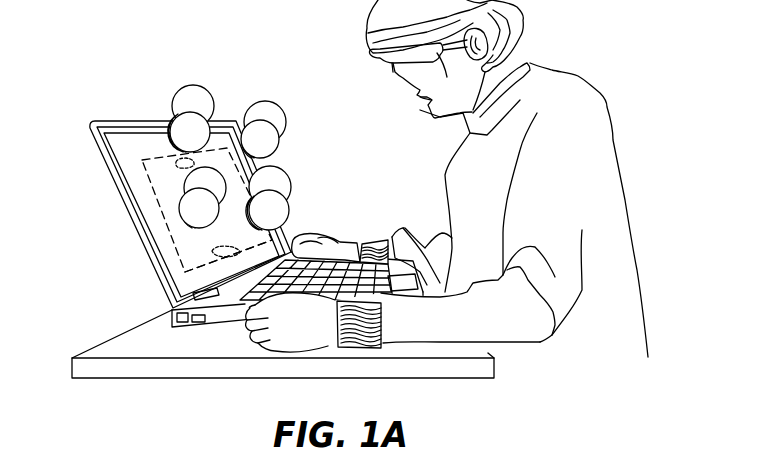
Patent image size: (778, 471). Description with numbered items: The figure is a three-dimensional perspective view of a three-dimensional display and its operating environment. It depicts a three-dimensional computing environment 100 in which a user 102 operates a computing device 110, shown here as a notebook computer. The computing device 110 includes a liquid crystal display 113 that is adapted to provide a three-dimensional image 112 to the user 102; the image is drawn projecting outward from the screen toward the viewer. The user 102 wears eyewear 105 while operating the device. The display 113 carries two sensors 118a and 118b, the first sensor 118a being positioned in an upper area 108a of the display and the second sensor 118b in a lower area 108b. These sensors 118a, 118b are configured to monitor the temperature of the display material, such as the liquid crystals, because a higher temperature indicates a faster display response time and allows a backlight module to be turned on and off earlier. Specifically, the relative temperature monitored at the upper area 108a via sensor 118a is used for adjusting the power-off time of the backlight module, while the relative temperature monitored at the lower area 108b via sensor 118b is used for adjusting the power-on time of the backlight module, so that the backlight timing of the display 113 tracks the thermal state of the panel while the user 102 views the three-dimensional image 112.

The three-dimensional computing environment 100 is at (106, 50).
The user 102 is at (603, 93).
The head-mounted display device 105 is at (392, 68).
The upper area 108a is at (128, 155).
The lower area 108b is at (178, 272).
The computing device 110 is at (99, 162).
The three-dimensional image 112 is at (246, 97).
The liquid crystal display 113 is at (140, 229).
The sensor 118a is at (182, 157).
The sensor 118b is at (219, 248).